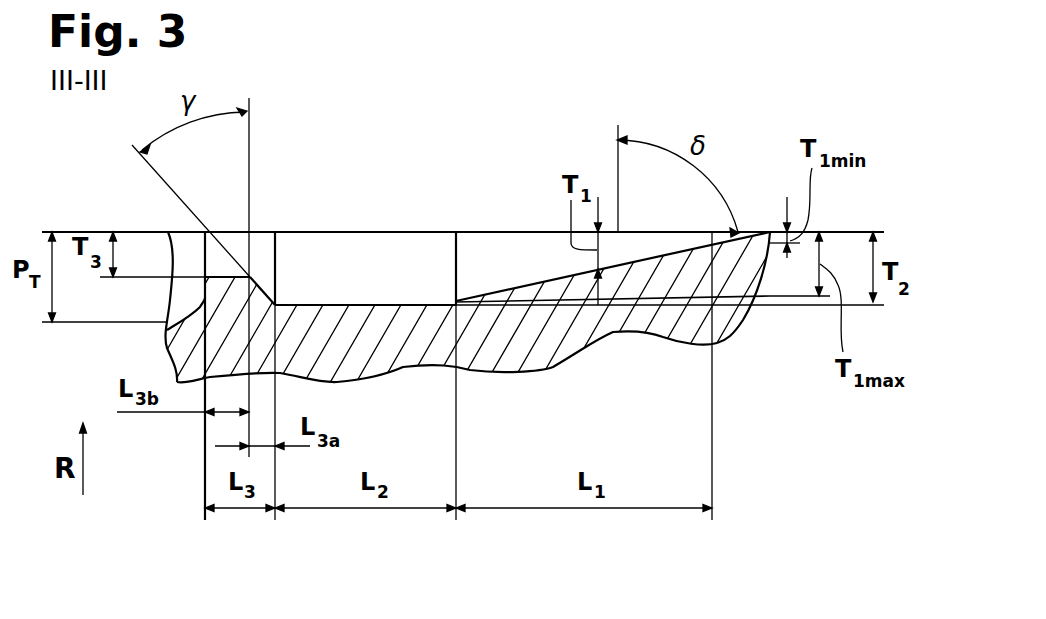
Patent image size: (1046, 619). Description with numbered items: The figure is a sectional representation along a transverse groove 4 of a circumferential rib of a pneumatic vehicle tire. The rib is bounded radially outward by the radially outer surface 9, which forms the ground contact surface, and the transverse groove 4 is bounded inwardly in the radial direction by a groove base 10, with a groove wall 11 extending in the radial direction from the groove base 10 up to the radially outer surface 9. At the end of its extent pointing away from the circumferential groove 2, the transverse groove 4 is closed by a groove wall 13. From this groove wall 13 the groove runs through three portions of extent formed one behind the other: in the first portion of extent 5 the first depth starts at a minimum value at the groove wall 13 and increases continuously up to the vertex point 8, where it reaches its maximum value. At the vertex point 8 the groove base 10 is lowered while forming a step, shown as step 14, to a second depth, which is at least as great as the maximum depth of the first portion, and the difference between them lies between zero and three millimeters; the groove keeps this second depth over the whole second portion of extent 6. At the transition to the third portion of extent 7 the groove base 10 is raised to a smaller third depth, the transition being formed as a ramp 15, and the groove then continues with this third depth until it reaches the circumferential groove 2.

The circumferential groove 2 is at (188, 253).
The transverse groove 4 is at (349, 232).
The first portion of extent 5 is at (548, 232).
The second portion of extent 6 is at (391, 232).
The third portion of extent 7 is at (223, 232).
The vertex point 8 is at (456, 300).
The radially outer surface 9 is at (527, 219).
The groove base 10 is at (356, 305).
The groove wall 11 is at (388, 277).
The groove wall 13 is at (711, 237).
The step 14 is at (456, 302).
The ramp 15 is at (277, 284).